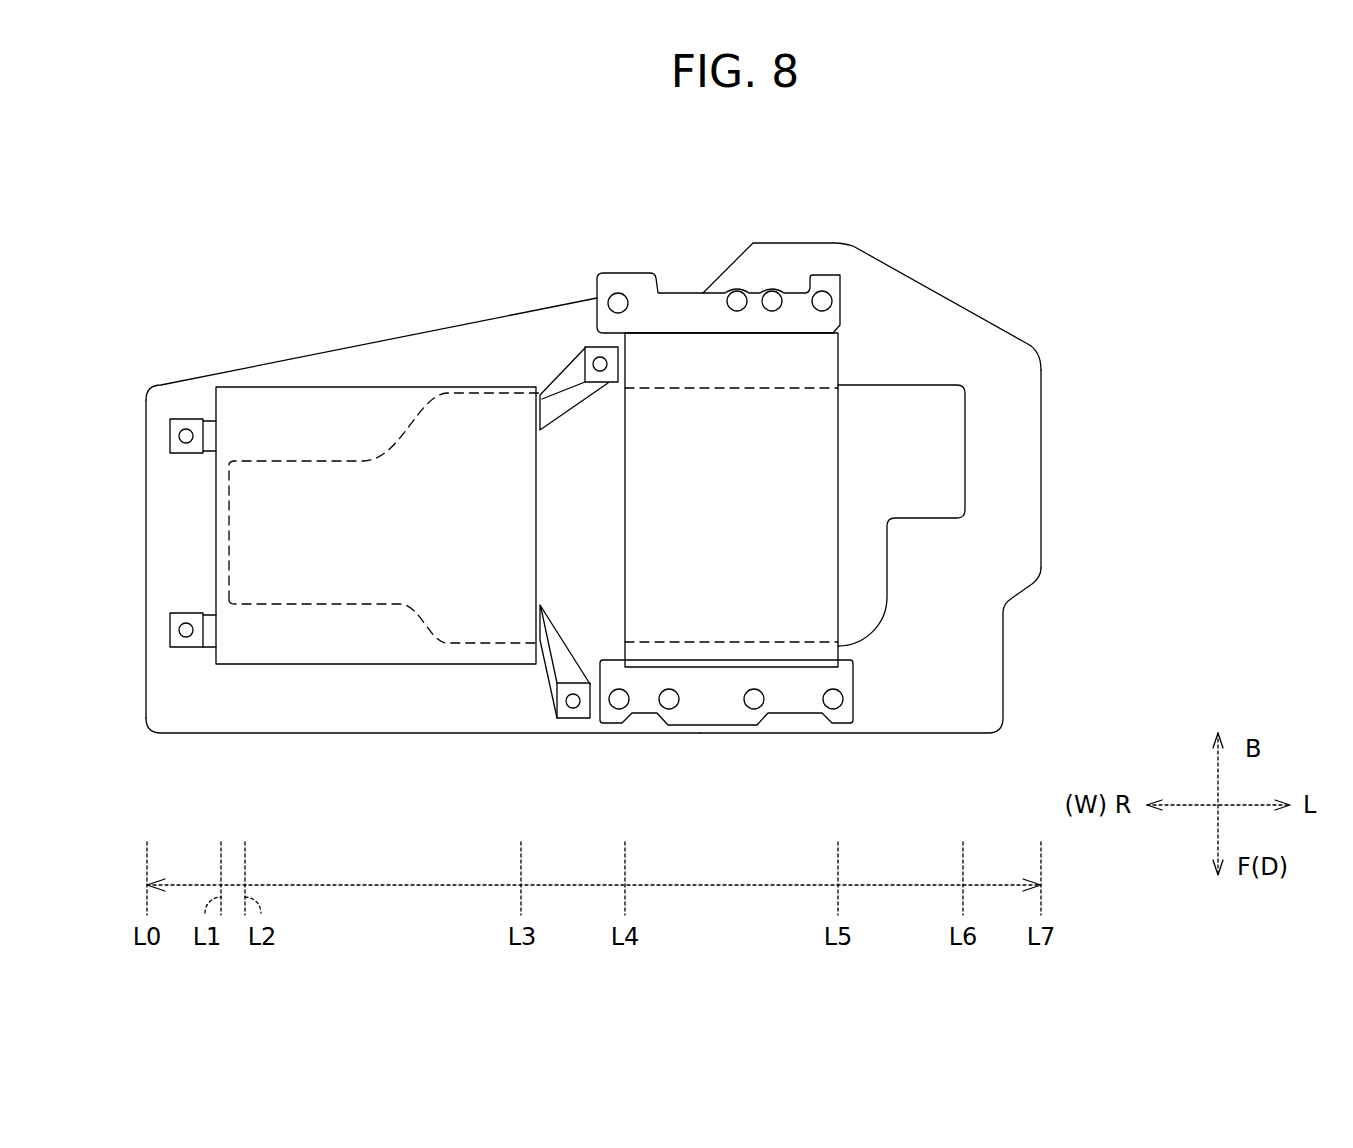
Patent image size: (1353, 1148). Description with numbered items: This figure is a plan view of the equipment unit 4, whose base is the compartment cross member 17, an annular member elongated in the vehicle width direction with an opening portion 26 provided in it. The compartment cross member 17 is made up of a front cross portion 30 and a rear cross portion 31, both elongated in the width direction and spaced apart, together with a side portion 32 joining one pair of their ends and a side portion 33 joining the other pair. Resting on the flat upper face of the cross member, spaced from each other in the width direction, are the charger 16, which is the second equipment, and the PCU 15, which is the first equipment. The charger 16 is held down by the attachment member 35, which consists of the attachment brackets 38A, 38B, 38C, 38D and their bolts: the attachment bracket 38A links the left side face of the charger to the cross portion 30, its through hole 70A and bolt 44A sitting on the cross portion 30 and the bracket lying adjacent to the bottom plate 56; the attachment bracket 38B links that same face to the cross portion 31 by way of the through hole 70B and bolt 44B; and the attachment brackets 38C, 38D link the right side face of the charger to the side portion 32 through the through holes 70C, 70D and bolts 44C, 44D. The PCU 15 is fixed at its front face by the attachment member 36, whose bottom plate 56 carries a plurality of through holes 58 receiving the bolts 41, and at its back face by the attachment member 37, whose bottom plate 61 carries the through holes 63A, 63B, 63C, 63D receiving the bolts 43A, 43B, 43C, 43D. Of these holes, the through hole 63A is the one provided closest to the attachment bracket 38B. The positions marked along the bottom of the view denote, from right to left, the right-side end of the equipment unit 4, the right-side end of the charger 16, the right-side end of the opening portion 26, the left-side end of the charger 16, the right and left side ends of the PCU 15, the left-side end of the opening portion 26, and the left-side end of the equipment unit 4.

The equipment unit 4 is at (514, 170).
The PCU 15 is at (825, 468).
The charger 16 is at (230, 532).
The compartment cross member 17 is at (968, 296).
The opening portion 26 is at (953, 425).
The cross portion 30 is at (430, 723).
The cross portion 31 is at (467, 342).
The side portion 32 is at (158, 594).
The side portion 33 is at (1025, 470).
The attachment member 35 is at (371, 328).
The attachment member 36 is at (877, 745).
The attachment member 37 is at (890, 232).
The attachment bracket 38A is at (558, 702).
The attachment bracket 38B is at (536, 538).
The attachment bracket 38C is at (151, 723).
The attachment bracket 38D is at (153, 375).
The bolt 41 is at (830, 773).
The bolt 43A is at (618, 300).
The bolt 43B is at (737, 298).
The bolt 43C is at (771, 298).
The bolt 43D is at (822, 298).
The bolt 44A is at (558, 758).
The bolt 44B is at (571, 455).
The bolt 44C is at (135, 630).
The bolt 44D is at (135, 438).
The bottom plate 56 is at (838, 678).
The through hole 58 is at (724, 760).
The bottom plate 61 is at (838, 321).
The through hole 63A is at (618, 252).
The through hole 63B is at (713, 244).
The through hole 63C is at (768, 218).
The through hole 63D is at (820, 244).
The through hole 70A is at (558, 758).
The through hole 70B is at (536, 538).
The through hole 70C is at (183, 723).
The through hole 70D is at (188, 375).